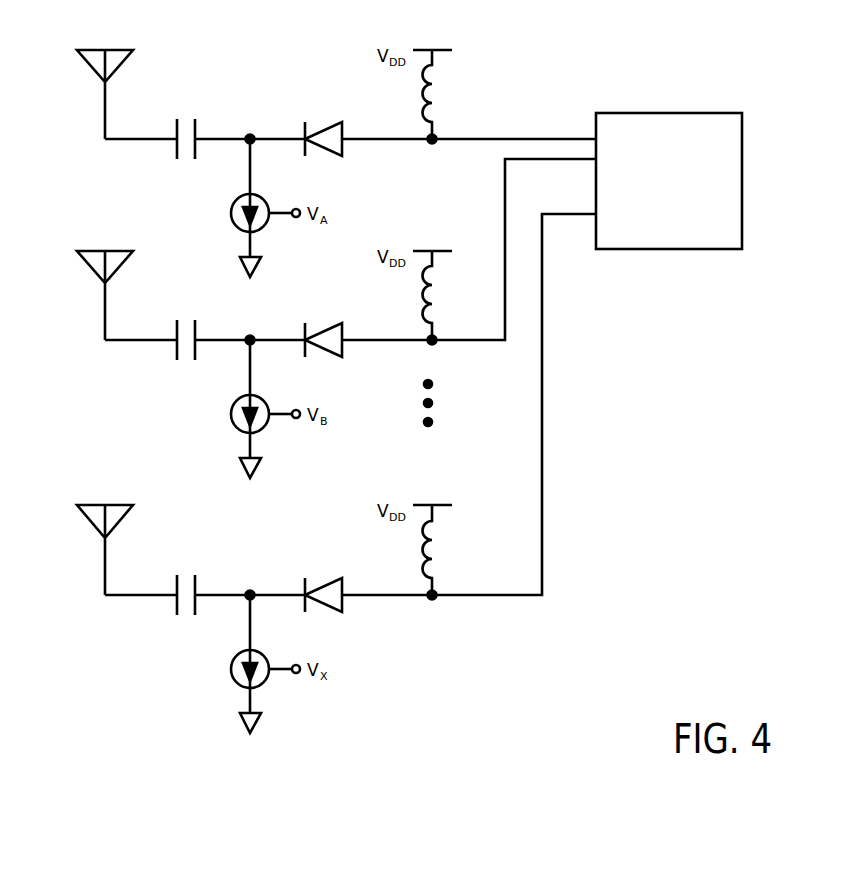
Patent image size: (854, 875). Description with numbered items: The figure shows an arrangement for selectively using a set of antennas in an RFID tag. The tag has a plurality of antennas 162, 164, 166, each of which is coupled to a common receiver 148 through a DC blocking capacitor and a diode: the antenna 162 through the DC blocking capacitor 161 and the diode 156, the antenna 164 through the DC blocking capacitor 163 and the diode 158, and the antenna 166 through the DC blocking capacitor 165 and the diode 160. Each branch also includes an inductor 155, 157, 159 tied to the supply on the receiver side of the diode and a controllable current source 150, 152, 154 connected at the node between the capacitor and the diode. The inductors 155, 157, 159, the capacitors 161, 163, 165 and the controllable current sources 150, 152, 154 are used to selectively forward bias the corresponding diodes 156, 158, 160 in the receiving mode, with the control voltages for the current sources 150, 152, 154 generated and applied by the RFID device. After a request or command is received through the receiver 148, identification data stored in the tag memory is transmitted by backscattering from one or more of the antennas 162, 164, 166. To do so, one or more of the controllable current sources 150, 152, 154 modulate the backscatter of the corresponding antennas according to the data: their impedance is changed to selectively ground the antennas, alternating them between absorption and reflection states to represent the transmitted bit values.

The receiver 148 is at (684, 206).
The controllable current source 150 is at (232, 218).
The controllable current source 152 is at (232, 419).
The controllable current source 154 is at (232, 675).
The inductor 155 is at (432, 105).
The diode 156 is at (328, 123).
The inductor 157 is at (432, 306).
The diode 158 is at (328, 324).
The inductor 159 is at (432, 560).
The diode 160 is at (328, 579).
The DC blocking capacitor 161 is at (176, 128).
The antenna 162 is at (83, 63).
The DC blocking capacitor 163 is at (176, 329).
The antenna 164 is at (83, 264).
The DC blocking capacitor 165 is at (176, 585).
The antenna 166 is at (83, 520).